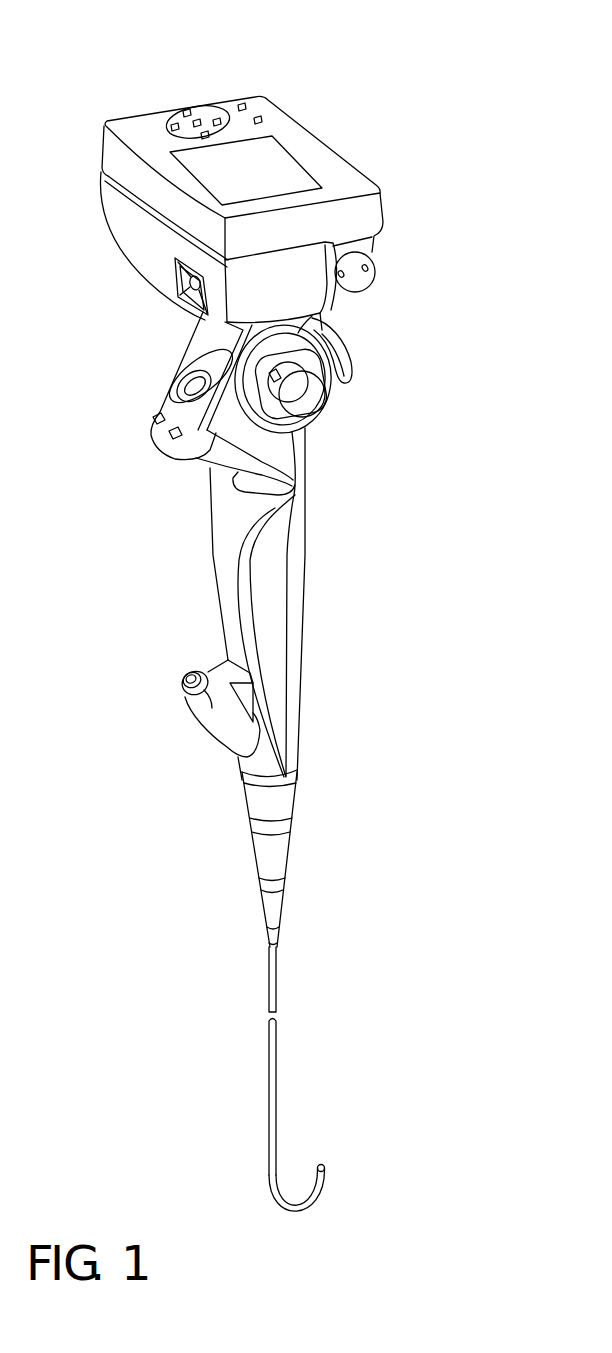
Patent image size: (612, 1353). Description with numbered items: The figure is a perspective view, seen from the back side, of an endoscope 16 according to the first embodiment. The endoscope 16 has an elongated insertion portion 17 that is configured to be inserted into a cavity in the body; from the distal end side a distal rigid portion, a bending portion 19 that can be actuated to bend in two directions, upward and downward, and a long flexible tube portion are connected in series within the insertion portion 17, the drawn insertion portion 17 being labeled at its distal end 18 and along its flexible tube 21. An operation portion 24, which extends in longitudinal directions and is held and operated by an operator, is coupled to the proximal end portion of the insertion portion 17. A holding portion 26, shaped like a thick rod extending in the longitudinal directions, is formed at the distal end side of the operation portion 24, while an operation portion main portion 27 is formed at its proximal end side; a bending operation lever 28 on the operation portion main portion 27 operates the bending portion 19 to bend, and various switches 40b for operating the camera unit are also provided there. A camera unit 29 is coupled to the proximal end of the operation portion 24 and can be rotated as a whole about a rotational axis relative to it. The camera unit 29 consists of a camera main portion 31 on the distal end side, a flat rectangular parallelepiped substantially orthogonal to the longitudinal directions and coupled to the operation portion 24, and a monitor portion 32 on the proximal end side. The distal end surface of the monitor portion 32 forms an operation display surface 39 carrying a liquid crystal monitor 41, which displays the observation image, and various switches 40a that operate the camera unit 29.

The endoscope 16 is at (337, 78).
The insertion portion 17 is at (298, 1047).
The distal end portion 18 is at (326, 1163).
The bending portion 19 is at (297, 1213).
The flexible tube portion 21 is at (268, 1118).
The operation portion 24 is at (383, 554).
The holding portion 26 is at (313, 636).
The operation portion main portion 27 is at (330, 416).
The bending operation lever 28 is at (347, 352).
The camera unit 29 is at (416, 228).
The camera main portion 31 is at (323, 307).
The monitor portion 32 is at (368, 212).
The operation display surface 39 is at (320, 157).
The various switches 40a is at (206, 88).
The various switches 40b is at (143, 436).
The liquid crystal monitor 41 is at (215, 163).